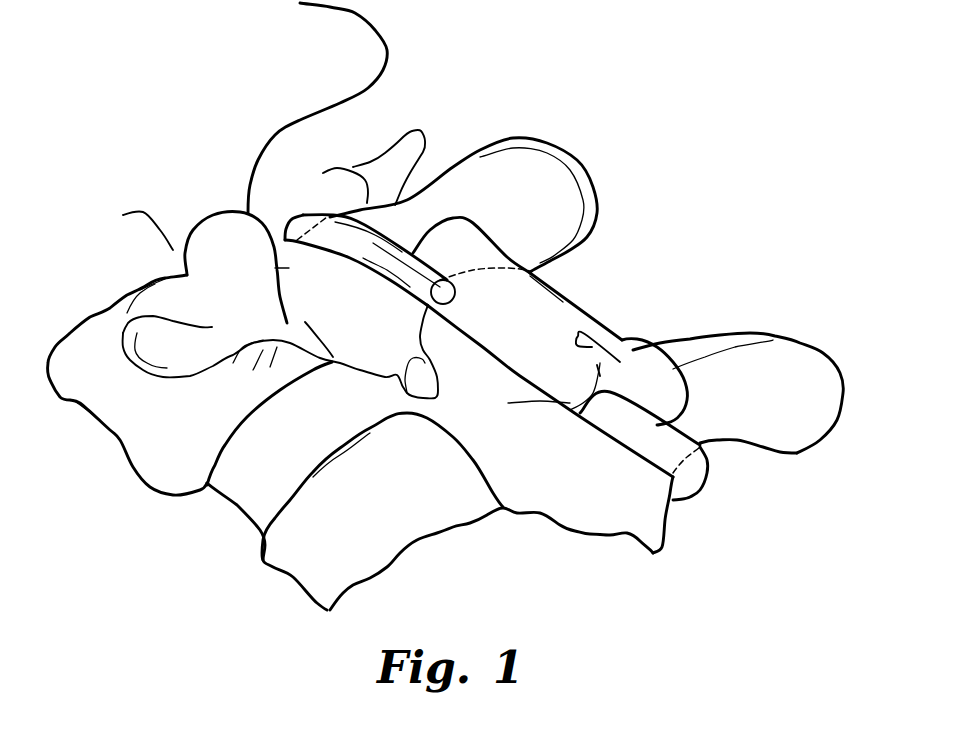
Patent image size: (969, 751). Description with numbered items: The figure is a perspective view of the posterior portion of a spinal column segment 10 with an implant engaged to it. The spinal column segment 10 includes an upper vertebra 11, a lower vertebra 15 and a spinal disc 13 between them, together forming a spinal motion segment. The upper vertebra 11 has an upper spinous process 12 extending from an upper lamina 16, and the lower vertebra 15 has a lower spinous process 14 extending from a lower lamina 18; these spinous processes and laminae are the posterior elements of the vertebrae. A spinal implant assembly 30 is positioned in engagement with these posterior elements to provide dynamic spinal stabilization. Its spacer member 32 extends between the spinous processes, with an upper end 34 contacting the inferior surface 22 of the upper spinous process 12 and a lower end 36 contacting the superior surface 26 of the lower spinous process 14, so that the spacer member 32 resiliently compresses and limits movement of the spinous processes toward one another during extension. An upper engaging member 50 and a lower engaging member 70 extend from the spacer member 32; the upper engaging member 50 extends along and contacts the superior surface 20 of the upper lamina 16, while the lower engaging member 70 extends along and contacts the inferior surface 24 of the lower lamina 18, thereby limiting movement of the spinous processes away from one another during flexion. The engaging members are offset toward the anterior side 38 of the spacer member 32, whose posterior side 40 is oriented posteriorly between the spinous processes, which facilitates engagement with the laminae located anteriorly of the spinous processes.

The spinal column segment 10 is at (547, 97).
The upper vertebra 11 is at (96, 364).
The upper spinous process 12 is at (587, 163).
The spinal disc 13 is at (257, 497).
The lower spinous process 14 is at (812, 373).
The lower vertebra 15 is at (365, 543).
The upper lamina 16 is at (289, 268).
The lower lamina 18 is at (667, 520).
The superior surface 20 is at (433, 200).
The inferior surface 22 is at (530, 270).
The inferior surface 24 is at (703, 443).
The superior surface 26 is at (753, 336).
The spinal implant assembly 30 is at (641, 281).
The spacer member 32 is at (597, 309).
The upper end 34 is at (532, 273).
The lower end 36 is at (697, 318).
The anterior side 38 is at (517, 355).
The posterior side 40 is at (580, 307).
The upper engaging member 50 is at (299, 208).
The lower engaging member 70 is at (712, 499).